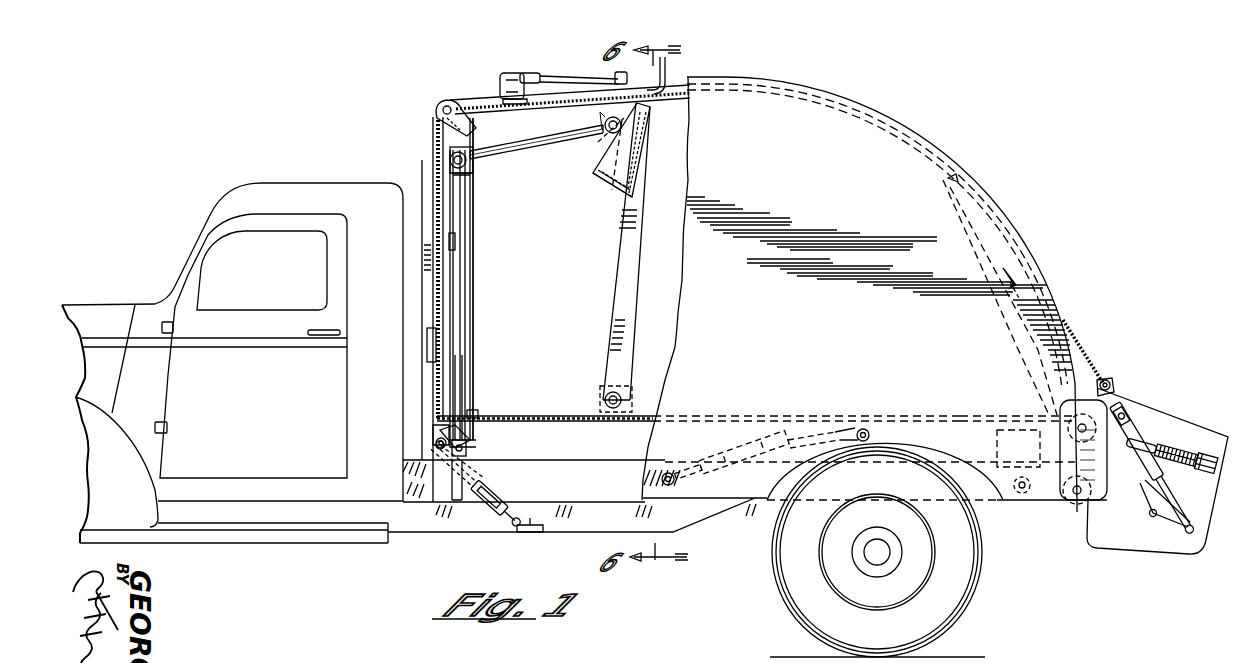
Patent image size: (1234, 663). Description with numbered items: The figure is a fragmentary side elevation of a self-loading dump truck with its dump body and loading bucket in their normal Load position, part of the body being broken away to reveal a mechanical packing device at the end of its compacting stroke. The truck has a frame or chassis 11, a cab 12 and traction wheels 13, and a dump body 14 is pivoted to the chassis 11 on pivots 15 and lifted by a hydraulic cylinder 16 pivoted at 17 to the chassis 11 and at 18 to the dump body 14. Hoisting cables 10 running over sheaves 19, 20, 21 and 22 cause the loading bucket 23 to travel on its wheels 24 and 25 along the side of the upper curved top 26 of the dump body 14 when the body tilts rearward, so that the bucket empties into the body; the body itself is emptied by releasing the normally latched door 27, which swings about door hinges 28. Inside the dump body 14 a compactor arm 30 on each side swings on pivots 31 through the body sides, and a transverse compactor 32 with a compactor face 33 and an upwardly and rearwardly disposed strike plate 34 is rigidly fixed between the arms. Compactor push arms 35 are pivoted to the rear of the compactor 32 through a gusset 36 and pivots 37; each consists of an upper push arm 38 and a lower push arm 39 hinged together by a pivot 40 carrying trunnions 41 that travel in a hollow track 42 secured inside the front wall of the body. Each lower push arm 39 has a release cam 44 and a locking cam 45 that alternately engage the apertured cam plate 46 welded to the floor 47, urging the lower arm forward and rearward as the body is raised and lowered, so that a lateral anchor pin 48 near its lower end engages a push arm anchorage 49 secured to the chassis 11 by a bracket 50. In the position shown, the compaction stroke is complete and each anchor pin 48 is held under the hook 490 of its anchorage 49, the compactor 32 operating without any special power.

The hoisting cables 10 is at (477, 100).
The frame or chassis 11 is at (762, 508).
The cab 12 is at (294, 195).
The traction wheels 13 is at (958, 603).
The dump body 14 is at (935, 145).
The pivots 15 is at (1022, 500).
The hydraulic cylinder 16 is at (747, 440).
The pivot 17 is at (660, 480).
The pivot 18 is at (868, 428).
The sheave 19 is at (432, 100).
The sheave 20 is at (426, 344).
The sheave 21 is at (432, 427).
The sheave 22 is at (517, 492).
The loading bucket 23 is at (1155, 420).
The wheel 24 is at (1128, 372).
The wheel 25 is at (1075, 512).
The upper curved top 26 is at (905, 157).
The door 27 is at (1000, 290).
The door hinges 28 is at (962, 172).
The compactor arm 30 is at (613, 338).
The pivots 31 is at (604, 401).
The compactor 32 is at (660, 158).
The compactor face 33 is at (634, 178).
The strike plate 34 is at (606, 188).
The compactor push arms 35 is at (510, 156).
The gusset 36 is at (606, 117).
The pivots 37 is at (597, 144).
The upper push arm 38 is at (488, 152).
The lower push arm 39 is at (462, 216).
The pivot 40 is at (449, 157).
The trunnions 41 is at (450, 175).
The hollow track 42 is at (470, 262).
The release cam 44 is at (455, 248).
The locking cam 45 is at (467, 363).
The cam plate 46 is at (470, 412).
The floor 47 is at (527, 426).
The anchor pin 48 is at (466, 447).
The push arm anchorage 49 is at (472, 466).
The hook 490 is at (457, 440).
The bracket 50 is at (465, 490).